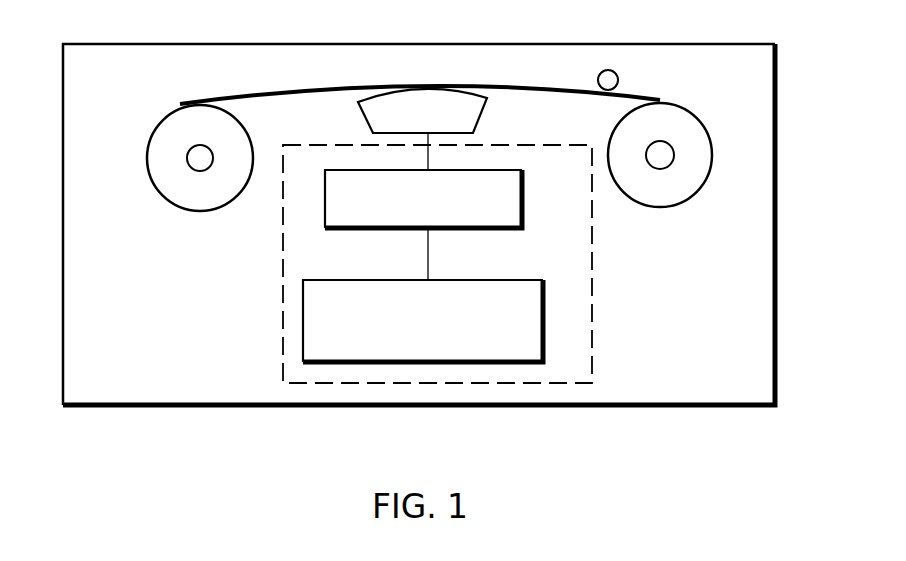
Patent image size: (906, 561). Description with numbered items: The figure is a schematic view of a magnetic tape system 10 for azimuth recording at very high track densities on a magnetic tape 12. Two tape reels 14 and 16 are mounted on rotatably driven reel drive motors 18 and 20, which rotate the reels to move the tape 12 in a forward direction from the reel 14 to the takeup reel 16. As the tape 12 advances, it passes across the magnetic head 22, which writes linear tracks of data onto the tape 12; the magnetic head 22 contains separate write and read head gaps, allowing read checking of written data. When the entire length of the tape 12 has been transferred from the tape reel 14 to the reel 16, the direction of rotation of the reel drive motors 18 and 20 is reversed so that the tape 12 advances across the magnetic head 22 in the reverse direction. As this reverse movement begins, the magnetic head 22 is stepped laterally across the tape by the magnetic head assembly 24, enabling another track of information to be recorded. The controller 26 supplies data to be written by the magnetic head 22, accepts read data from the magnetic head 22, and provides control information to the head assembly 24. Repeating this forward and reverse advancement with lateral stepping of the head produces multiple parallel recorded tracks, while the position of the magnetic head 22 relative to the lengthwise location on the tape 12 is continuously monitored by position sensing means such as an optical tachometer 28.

The magnetic tape system 10 is at (778, 345).
The magnetic tape 12 is at (495, 90).
The tape reel 14 is at (149, 142).
The takeup reel 16 is at (722, 115).
The reel drive motor 18 is at (188, 163).
The reel drive motor 20 is at (666, 164).
The magnetic head 22 is at (483, 110).
The magnetic head assembly 24 is at (525, 198).
The controller 26 is at (546, 307).
The optical tachometer 28 is at (619, 76).